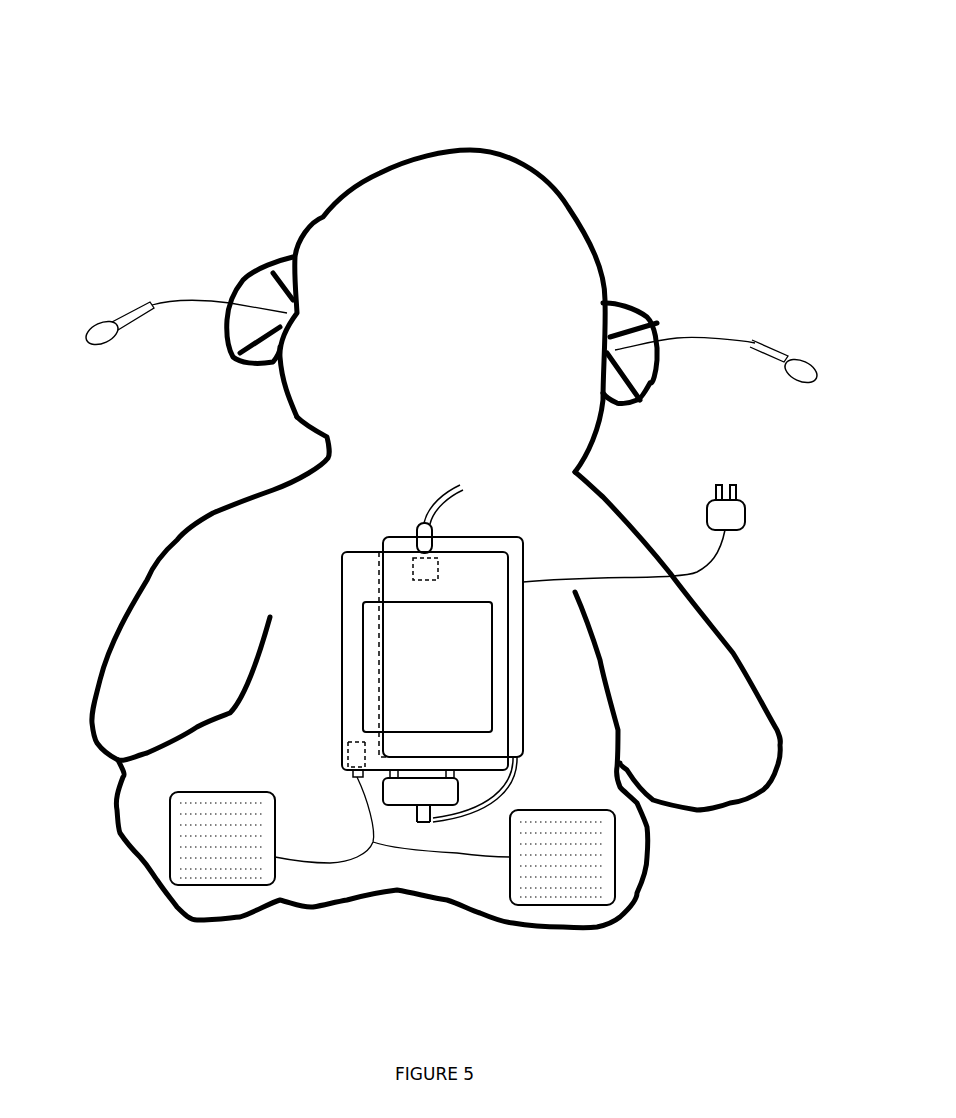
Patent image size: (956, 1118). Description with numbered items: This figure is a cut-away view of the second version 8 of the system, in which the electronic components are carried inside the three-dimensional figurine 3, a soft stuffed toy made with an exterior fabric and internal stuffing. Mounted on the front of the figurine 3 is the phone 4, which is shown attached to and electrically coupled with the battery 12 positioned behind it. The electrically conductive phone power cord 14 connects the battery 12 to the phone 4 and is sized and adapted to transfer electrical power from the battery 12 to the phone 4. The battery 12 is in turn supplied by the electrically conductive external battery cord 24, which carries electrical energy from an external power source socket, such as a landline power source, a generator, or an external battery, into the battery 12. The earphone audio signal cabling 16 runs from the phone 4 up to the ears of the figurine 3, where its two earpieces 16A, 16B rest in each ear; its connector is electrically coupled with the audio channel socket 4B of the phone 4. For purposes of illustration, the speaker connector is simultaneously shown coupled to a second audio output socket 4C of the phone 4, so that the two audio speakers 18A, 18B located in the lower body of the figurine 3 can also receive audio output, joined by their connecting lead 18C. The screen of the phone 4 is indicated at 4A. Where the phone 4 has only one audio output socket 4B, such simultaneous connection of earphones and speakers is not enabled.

The three-dimensional figurine 3 is at (380, 173).
The second version 8 is at (166, 118).
The phone 4 is at (360, 552).
The display screen 4A is at (363, 648).
The audio channel socket 4B is at (413, 575).
The second audio output socket 4C is at (347, 752).
The battery 12 is at (525, 557).
The phone power cord 14 is at (515, 780).
The audio signal cabling 16 is at (210, 302).
The left earbud 16A is at (100, 323).
The right earbud 16B is at (808, 362).
The audio speaker 18A is at (217, 887).
The audio speaker 18B is at (615, 857).
The pad connector 18C is at (457, 853).
The external battery cord 24 is at (747, 508).